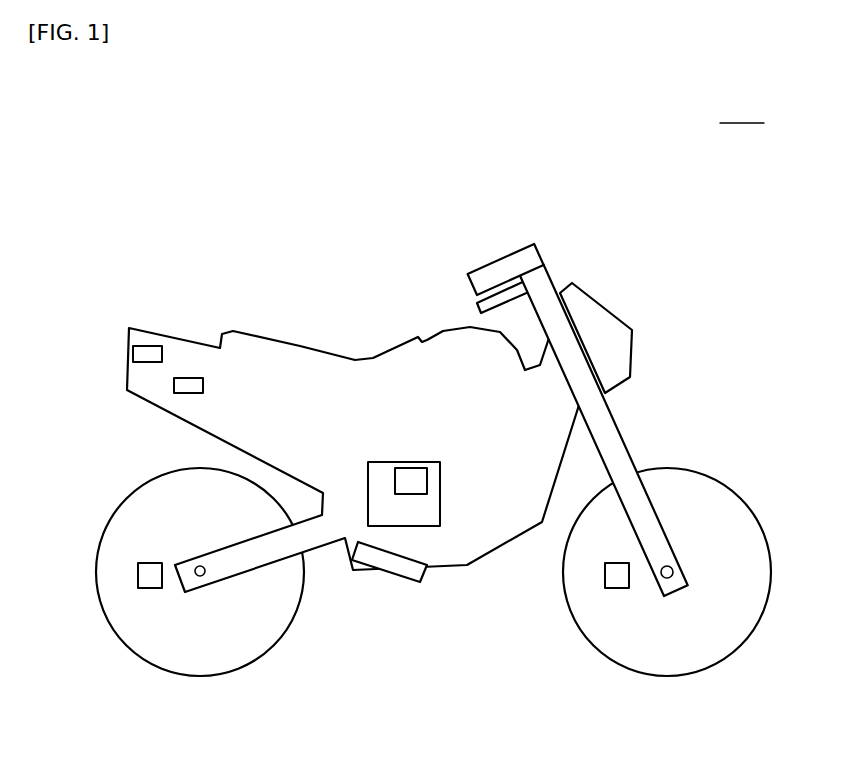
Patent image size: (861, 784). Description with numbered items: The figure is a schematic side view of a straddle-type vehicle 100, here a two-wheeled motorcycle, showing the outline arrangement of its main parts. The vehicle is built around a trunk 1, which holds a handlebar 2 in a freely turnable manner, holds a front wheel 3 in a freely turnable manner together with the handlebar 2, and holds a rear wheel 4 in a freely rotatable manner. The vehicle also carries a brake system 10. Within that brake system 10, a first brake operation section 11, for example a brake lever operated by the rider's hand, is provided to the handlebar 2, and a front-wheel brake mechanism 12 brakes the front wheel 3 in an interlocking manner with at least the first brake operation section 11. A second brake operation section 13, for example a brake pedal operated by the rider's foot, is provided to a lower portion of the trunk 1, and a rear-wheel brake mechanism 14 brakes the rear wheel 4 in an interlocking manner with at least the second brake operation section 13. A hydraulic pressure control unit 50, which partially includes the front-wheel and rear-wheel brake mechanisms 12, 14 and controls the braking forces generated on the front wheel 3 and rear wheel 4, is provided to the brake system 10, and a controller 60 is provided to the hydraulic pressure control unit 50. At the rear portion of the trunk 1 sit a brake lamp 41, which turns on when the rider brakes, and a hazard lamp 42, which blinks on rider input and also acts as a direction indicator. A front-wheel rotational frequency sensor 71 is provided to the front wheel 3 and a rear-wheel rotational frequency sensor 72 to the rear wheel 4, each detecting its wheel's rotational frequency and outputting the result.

The straddle-type vehicle 100 is at (742, 111).
The trunk 1 is at (262, 350).
The handlebar 2 is at (482, 278).
The front wheel 3 is at (667, 683).
The rear wheel 4 is at (200, 683).
The brake system 10 is at (658, 397).
The first brake operation section 11 is at (502, 295).
The front-wheel brake mechanism 12 is at (682, 543).
The second brake operation section 13 is at (400, 567).
The rear-wheel brake mechanism 14 is at (183, 553).
The brake lamp 41 is at (150, 347).
The hazard lamp 42 is at (192, 377).
The hydraulic pressure control unit 50 is at (385, 462).
The controller (ECU) 60 is at (412, 467).
The front-wheel rotational frequency sensor 71 is at (617, 590).
The rear-wheel rotational frequency sensor 72 is at (138, 575).